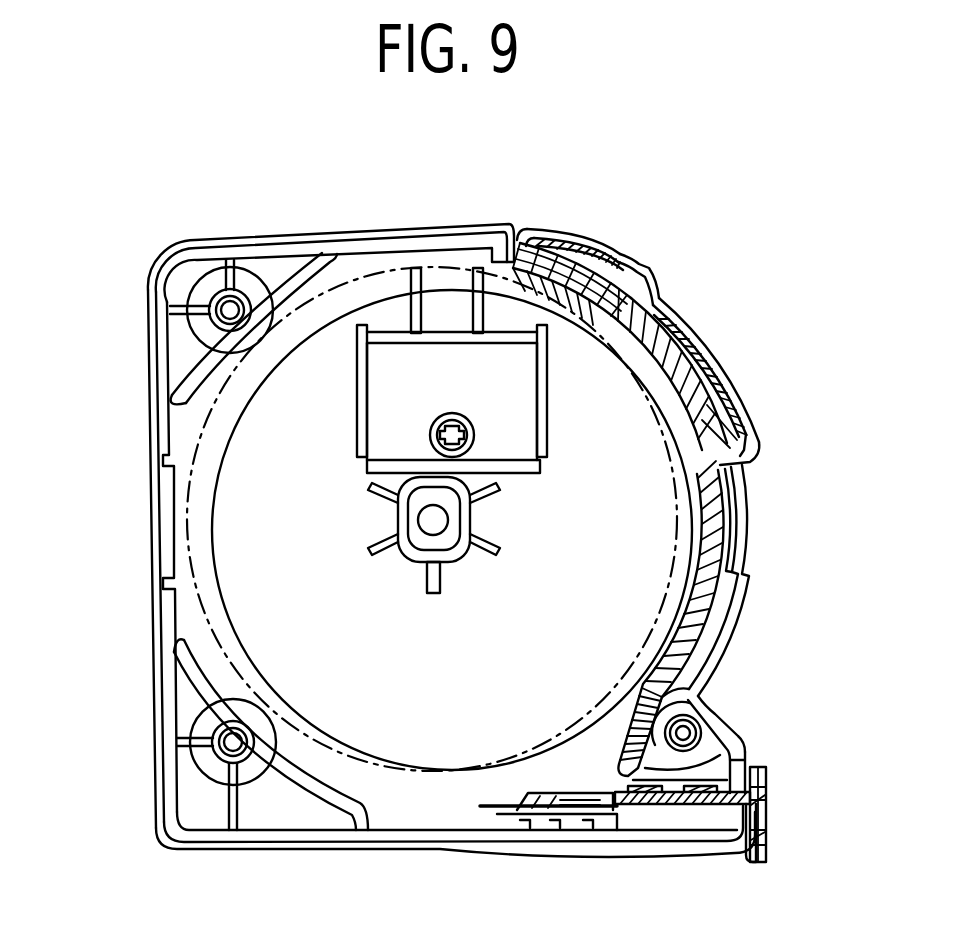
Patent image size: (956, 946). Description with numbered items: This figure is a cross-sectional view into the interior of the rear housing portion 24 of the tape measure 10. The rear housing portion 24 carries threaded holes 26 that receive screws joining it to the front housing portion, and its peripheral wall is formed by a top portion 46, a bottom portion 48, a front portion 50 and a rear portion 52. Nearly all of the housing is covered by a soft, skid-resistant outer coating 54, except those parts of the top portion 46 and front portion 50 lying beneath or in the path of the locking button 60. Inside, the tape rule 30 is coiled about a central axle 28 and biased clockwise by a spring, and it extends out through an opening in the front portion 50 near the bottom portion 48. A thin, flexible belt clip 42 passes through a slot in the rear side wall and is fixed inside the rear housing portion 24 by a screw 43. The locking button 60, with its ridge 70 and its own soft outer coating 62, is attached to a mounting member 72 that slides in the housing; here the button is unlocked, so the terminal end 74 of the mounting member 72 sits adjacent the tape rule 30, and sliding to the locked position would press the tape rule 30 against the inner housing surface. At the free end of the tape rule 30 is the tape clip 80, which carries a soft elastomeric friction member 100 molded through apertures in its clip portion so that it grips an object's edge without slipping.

The tape measure 10 is at (178, 185).
The rear housing portion 24 is at (281, 224).
The threaded holes 26 is at (222, 316).
The axle 28 is at (408, 568).
The tape rule 30 is at (490, 808).
The belt clip 42 is at (512, 407).
The screw 43 is at (474, 432).
The top portion 46 is at (380, 222).
The bottom portion 48 is at (316, 860).
The front portion 50 is at (754, 545).
The rear portion 52 is at (145, 655).
The outer coating 54 is at (472, 226).
The locking button 60 is at (703, 340).
The outer coating 62 is at (742, 406).
The ridge 70 is at (627, 260).
The mounting member 72 is at (722, 512).
The terminal end 74 is at (746, 750).
The tape clip 80 is at (772, 856).
The friction member 100 is at (752, 838).